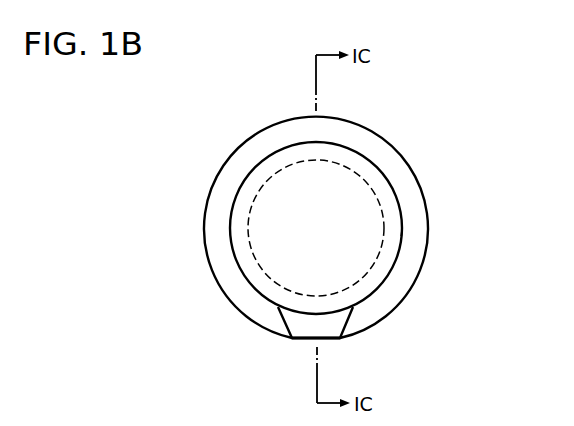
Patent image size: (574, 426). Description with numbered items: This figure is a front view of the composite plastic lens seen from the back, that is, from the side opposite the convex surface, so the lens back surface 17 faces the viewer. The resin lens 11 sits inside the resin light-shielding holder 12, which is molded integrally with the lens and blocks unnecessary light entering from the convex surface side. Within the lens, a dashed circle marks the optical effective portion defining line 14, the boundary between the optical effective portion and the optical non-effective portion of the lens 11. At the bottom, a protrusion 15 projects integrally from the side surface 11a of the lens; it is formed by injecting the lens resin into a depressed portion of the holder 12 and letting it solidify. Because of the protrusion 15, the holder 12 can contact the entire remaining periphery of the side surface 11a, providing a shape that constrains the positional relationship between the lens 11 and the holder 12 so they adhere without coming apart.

The resin lens 11 is at (270, 201).
The side surface 11a is at (402, 232).
The resin light-shielding holder 12 is at (235, 285).
The optical effective portion defining line 14 is at (377, 195).
The protrusion 15 is at (330, 328).
The lens back surface 17 is at (353, 247).